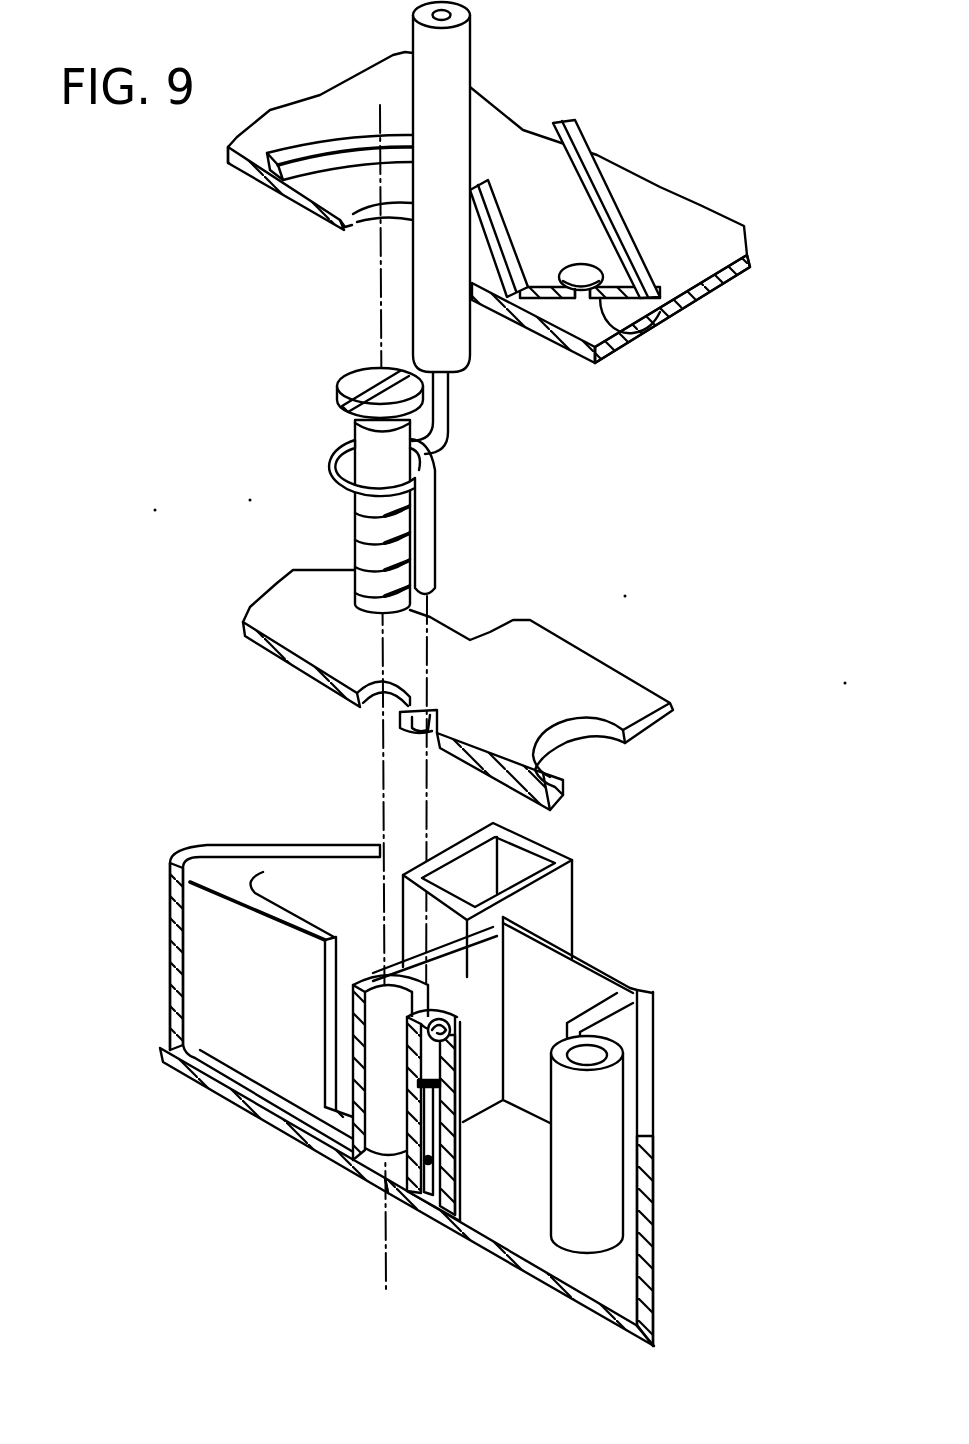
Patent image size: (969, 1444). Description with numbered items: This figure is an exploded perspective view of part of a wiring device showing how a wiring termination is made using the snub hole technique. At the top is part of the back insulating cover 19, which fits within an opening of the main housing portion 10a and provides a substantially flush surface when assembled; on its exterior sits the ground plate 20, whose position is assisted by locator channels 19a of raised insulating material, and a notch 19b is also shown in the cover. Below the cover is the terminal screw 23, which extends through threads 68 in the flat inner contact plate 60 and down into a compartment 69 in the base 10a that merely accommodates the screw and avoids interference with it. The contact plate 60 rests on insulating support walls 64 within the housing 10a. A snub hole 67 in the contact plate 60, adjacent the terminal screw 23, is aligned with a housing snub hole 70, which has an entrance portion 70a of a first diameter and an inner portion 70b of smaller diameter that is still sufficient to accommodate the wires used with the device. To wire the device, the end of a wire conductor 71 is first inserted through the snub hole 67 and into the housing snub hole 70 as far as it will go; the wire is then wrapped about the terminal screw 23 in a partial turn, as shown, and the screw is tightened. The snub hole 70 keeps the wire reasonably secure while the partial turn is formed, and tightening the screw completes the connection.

The back insulating cover 19 is at (703, 232).
The locator channels 19a is at (591, 170).
The notch in cover plate 19b is at (357, 228).
The ground plate 20 is at (622, 325).
The terminal screw 23 is at (353, 384).
The inner contact plate 60 is at (542, 644).
The insulating support walls 64 is at (571, 976).
The snub hole 67 is at (437, 708).
The threads 68 is at (373, 698).
The compartment 69 is at (372, 1049).
The housing snub hole 70 is at (450, 1113).
The entrance portion 70a is at (447, 1022).
The inner portion 70b is at (432, 1161).
The wire conductor 71 is at (431, 508).
The main housing portion 10a is at (238, 1110).